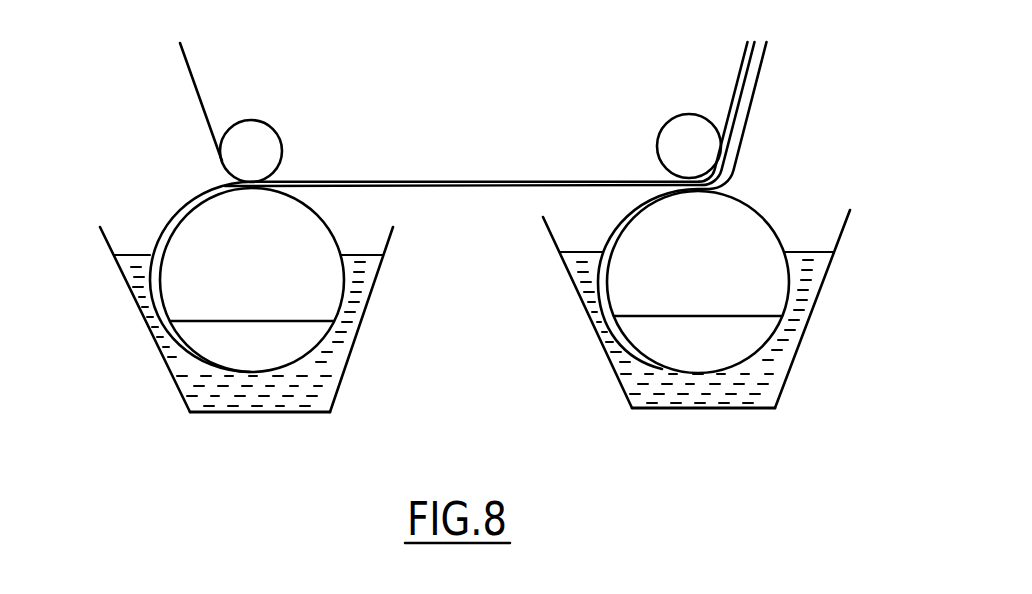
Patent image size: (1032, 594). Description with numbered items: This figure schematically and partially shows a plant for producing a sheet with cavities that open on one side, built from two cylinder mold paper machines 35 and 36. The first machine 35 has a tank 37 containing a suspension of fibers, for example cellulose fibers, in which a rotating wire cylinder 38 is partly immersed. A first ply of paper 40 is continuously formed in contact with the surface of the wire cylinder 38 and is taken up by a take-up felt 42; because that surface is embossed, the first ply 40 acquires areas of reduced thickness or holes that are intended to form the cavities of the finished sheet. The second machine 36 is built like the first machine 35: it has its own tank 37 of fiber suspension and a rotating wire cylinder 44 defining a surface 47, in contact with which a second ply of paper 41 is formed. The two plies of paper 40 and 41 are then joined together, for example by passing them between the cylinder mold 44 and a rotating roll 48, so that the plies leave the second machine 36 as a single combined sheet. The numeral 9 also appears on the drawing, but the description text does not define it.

The roller 9 is at (163, 305).
The first paper machine 35 is at (100, 307).
The second paper machine 36 is at (848, 288).
The tank 37 is at (262, 413).
The rotating wire cylinder 38 is at (213, 340).
The first ply of paper 40 is at (169, 215).
The second ply of paper 41 is at (617, 222).
The take-up felt 42 is at (200, 98).
The rotating wire cylinder 44 is at (750, 362).
The surface 47 is at (602, 283).
The rotating roll 48 is at (683, 138).